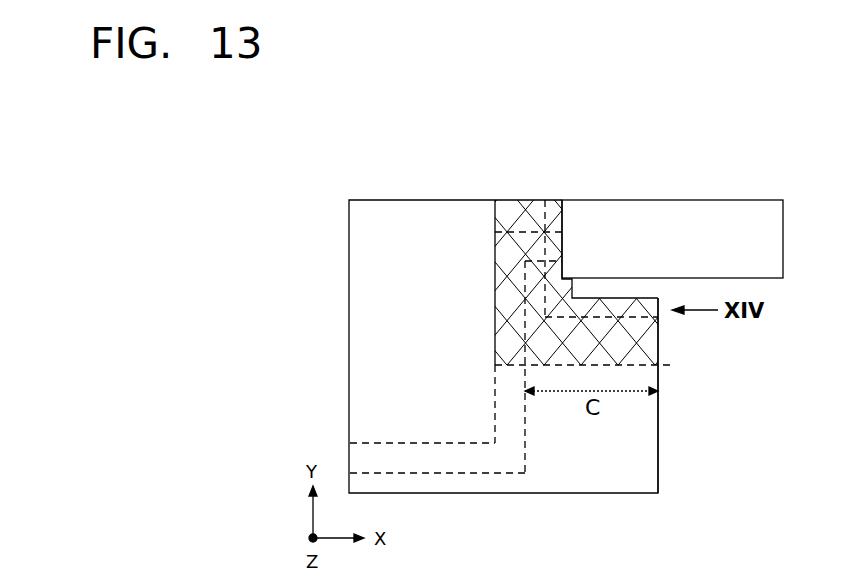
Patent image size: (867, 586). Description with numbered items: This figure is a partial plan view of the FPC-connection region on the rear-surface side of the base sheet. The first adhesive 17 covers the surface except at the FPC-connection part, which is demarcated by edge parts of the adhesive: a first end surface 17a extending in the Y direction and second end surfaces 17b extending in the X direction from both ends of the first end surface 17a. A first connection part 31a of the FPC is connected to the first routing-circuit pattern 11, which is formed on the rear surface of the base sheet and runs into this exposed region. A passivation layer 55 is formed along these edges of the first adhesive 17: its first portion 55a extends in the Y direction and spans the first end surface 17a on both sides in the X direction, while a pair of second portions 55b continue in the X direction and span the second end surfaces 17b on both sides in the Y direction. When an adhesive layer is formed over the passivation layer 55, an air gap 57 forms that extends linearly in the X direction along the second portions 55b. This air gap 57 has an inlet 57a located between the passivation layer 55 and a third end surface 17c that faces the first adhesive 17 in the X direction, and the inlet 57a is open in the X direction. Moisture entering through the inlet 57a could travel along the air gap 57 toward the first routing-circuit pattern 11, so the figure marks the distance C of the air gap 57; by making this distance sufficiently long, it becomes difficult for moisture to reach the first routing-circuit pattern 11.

The first routing-circuit pattern 11 is at (493, 474).
The first adhesive 17 is at (442, 319).
The first end surface 17a is at (555, 210).
The second end surface 17b is at (660, 328).
The third end surface 17c is at (660, 470).
The first connection part 31a is at (622, 210).
The passivation layer 55 is at (487, 223).
The first portion 55a is at (503, 287).
The second portion 55b is at (600, 350).
The air gap 57 is at (566, 368).
The inlet 57a is at (658, 365).